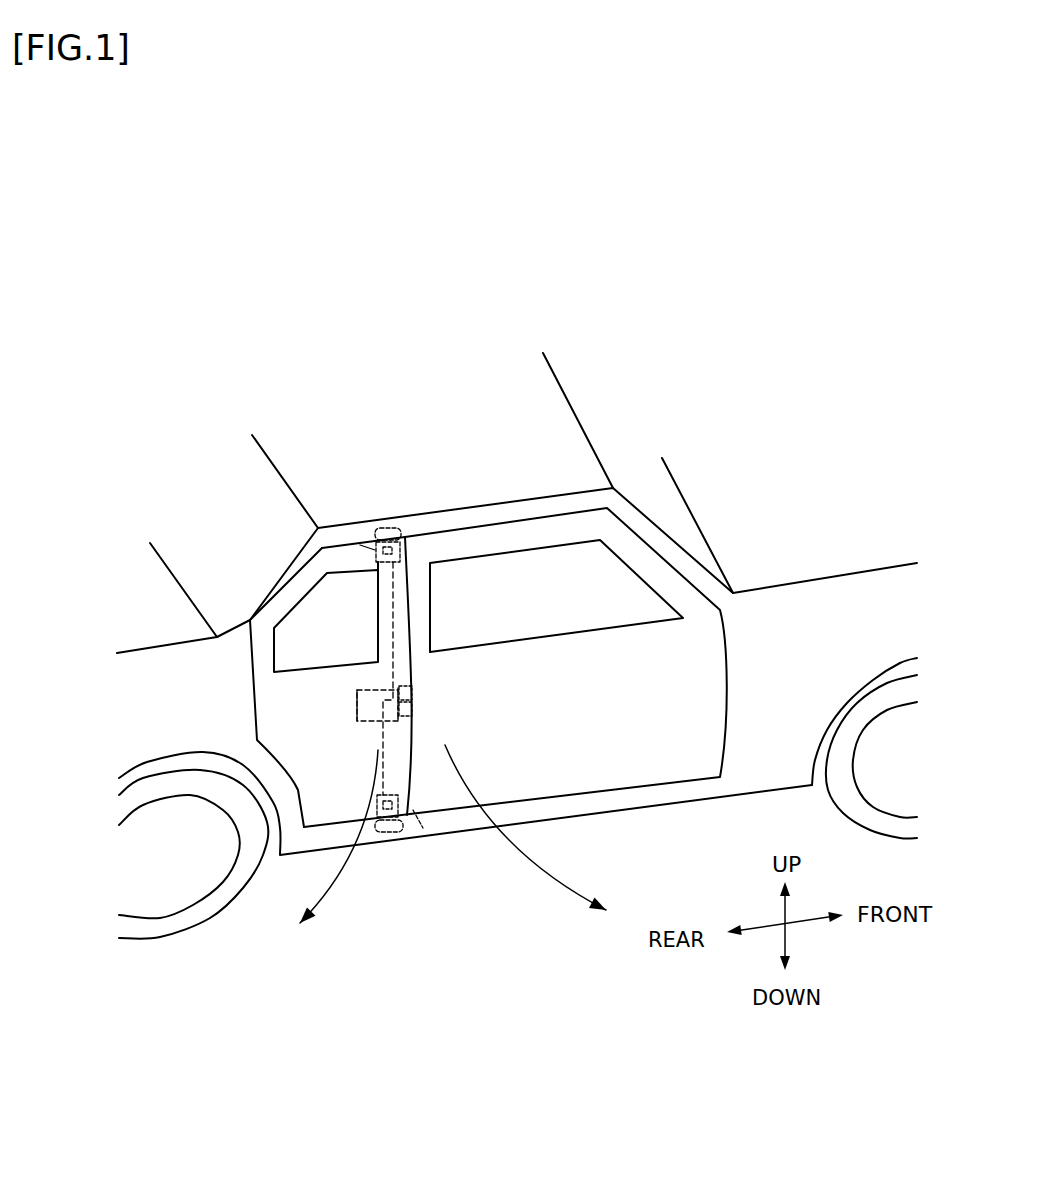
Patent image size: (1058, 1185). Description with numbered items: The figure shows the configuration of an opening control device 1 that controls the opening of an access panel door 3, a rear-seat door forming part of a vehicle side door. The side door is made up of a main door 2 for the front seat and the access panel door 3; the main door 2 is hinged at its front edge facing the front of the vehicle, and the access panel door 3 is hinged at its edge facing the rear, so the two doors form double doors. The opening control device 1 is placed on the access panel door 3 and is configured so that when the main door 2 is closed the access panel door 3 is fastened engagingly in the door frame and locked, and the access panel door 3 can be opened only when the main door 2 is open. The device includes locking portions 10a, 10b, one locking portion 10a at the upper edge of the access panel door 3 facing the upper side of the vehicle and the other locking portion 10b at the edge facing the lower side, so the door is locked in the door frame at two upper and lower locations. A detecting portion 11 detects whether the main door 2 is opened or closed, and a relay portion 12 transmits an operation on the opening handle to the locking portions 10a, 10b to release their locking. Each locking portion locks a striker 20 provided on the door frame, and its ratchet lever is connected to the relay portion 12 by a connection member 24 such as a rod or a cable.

The opening control device 1 is at (343, 712).
The main door 2 is at (598, 735).
The access panel door 3 is at (320, 768).
The locking portion 10a is at (358, 543).
The locking portion 10b is at (423, 823).
The detecting portion 11 is at (418, 712).
The relay portion 12 is at (355, 696).
The striker 20 is at (393, 527).
The connection member 24 is at (395, 612).